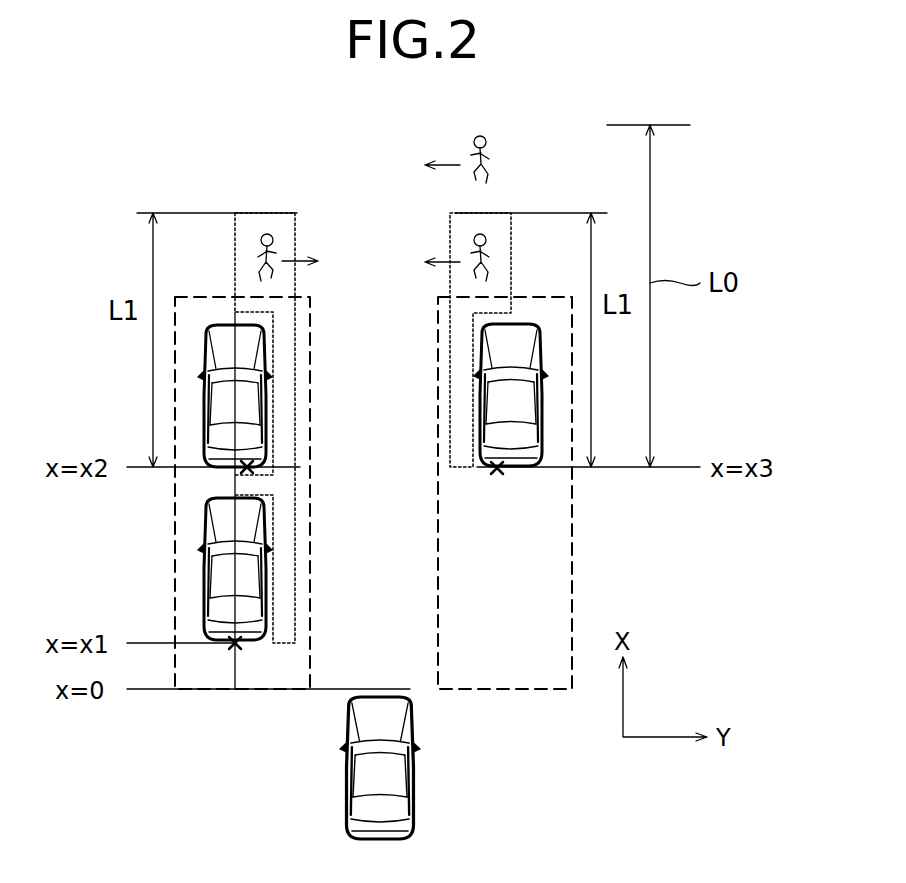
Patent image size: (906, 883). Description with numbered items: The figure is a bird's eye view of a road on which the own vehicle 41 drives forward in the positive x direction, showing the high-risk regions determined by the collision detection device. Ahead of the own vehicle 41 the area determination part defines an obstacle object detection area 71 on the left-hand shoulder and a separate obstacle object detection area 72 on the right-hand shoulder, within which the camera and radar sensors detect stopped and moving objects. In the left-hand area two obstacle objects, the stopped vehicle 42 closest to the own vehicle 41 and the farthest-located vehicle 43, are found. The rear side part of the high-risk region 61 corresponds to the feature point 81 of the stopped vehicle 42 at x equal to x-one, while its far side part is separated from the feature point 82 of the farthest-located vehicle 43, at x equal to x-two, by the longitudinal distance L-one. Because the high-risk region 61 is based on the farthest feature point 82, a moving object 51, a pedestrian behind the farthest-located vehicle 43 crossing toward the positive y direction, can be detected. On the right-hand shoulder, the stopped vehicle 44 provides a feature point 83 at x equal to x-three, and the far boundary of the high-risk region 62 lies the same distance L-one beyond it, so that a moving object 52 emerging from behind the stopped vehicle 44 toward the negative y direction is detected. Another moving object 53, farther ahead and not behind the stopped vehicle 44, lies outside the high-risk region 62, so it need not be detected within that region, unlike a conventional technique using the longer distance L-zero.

The own vehicle 41 is at (390, 780).
The stopped vehicle 42 is at (203, 580).
The farthest-located vehicle 43 is at (203, 390).
The stopped vehicle 44 is at (522, 399).
The moving object 51 is at (275, 238).
The moving object 52 is at (472, 239).
The moving object 53 is at (487, 137).
The high-risk region 61 is at (290, 608).
The high-risk region 62 is at (460, 387).
The obstacle object detection area 71 is at (175, 515).
The obstacle object detection area 72 is at (572, 517).
The feature point 81 is at (240, 650).
The feature point 82 is at (255, 470).
The feature point 83 is at (493, 474).